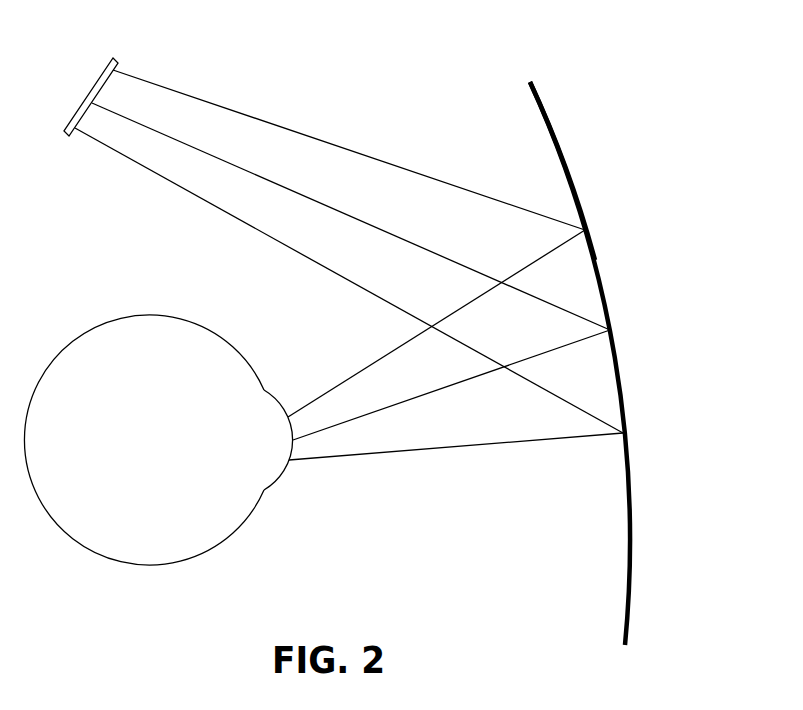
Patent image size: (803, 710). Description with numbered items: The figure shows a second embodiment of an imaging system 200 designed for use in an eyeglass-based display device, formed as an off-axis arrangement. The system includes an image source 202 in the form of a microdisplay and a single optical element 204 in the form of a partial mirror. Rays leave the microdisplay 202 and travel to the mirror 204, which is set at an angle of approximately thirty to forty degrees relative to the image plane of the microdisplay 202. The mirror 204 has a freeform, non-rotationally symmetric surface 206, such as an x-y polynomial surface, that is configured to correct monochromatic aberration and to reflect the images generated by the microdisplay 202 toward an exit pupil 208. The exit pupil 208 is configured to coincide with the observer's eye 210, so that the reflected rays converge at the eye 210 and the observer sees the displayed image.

The imaging system 200 is at (680, 127).
The image source 202 is at (90, 103).
The optical element 204 is at (640, 330).
The freeform, non-rotationally symmetric surface 206 is at (545, 127).
The exit pupil 208 is at (279, 454).
The observer's eye 210 is at (144, 440).